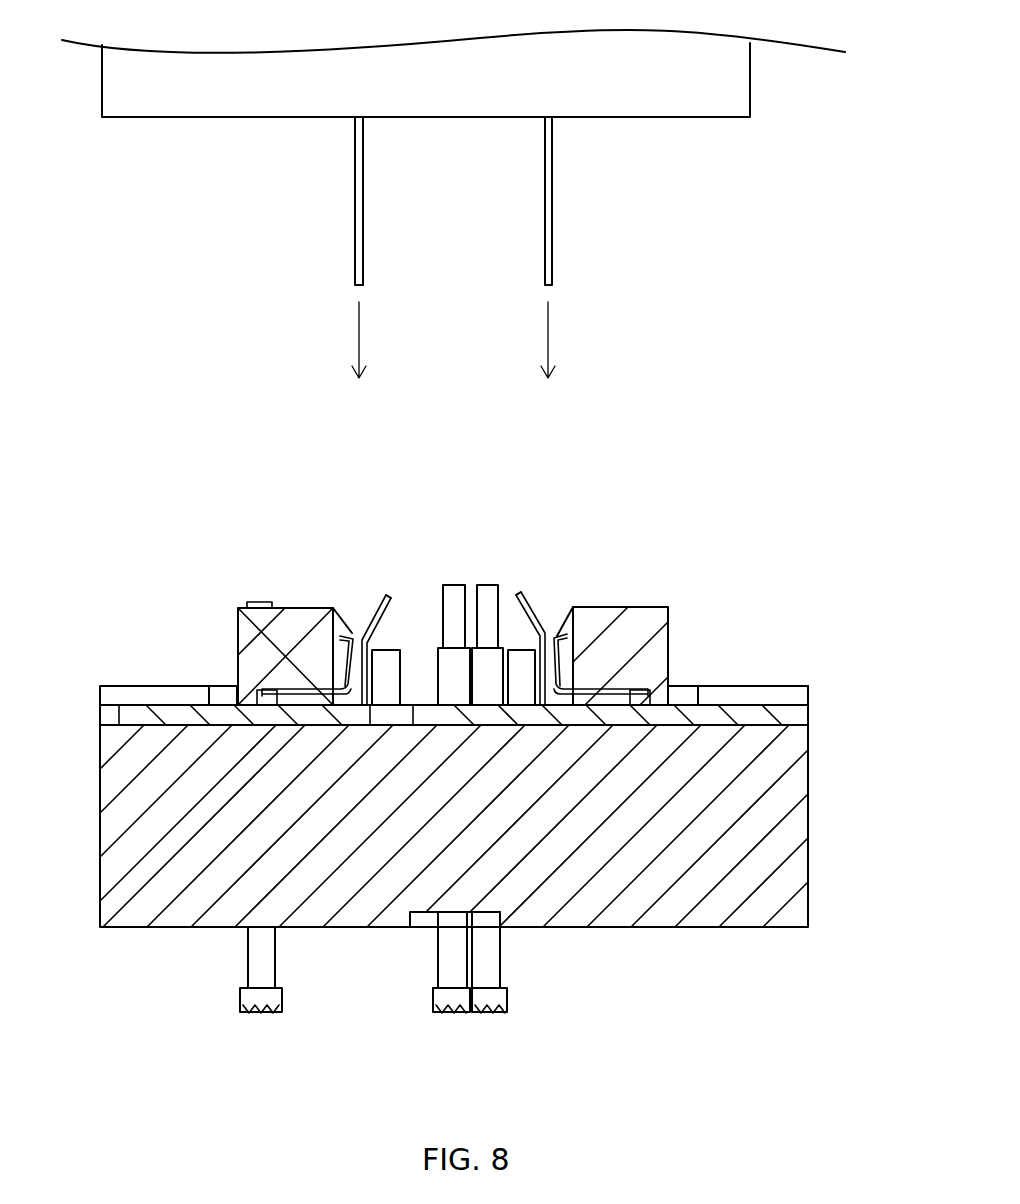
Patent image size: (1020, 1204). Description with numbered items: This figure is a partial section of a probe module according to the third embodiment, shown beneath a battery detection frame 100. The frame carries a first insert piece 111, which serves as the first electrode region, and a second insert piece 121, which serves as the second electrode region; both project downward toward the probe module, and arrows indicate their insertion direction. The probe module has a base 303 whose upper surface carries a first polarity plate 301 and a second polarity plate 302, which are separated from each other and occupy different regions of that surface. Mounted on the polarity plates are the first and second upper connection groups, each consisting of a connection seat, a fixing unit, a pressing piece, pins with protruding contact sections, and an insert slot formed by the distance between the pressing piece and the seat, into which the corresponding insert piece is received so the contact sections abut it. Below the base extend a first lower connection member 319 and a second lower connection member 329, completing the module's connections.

The battery detection frame 100 is at (735, 80).
The first insert piece 111 is at (552, 192).
The second insert piece 121 is at (355, 195).
The first polarity plate 301 is at (755, 710).
The second polarity plate 302 is at (178, 712).
The base 303 is at (705, 910).
The first lower connection member 319 is at (472, 572).
The second lower connection member 329 is at (220, 950).